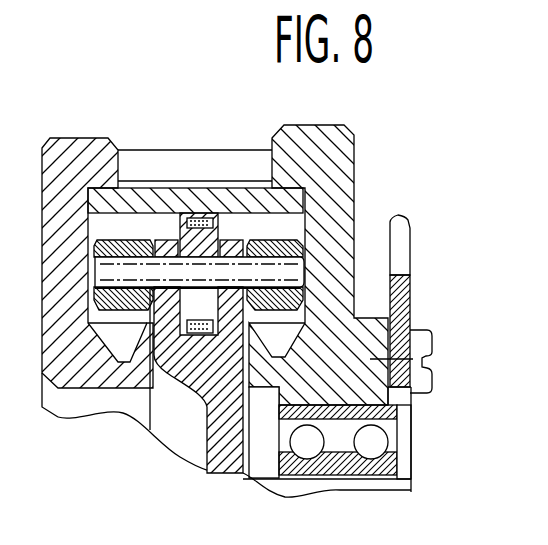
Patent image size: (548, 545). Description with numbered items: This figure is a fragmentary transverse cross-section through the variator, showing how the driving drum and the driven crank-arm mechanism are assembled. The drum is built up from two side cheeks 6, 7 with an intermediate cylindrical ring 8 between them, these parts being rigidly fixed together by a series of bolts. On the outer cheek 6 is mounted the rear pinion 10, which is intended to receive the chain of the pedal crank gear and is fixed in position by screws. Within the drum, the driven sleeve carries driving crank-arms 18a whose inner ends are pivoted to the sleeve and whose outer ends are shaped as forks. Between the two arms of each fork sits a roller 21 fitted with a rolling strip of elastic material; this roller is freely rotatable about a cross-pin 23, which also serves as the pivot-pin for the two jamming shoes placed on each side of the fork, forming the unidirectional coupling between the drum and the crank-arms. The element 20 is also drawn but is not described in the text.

The side cheek 7 is at (83, 138).
The intermediate cylindrical ring 8 is at (153, 200).
The roller 21 is at (227, 213).
The outer cheek 6 is at (315, 128).
The rear pinion 10 is at (398, 220).
The cross-pin 23 is at (120, 275).
The spindle body 20 is at (182, 353).
The driving crank-arm 18a is at (213, 445).